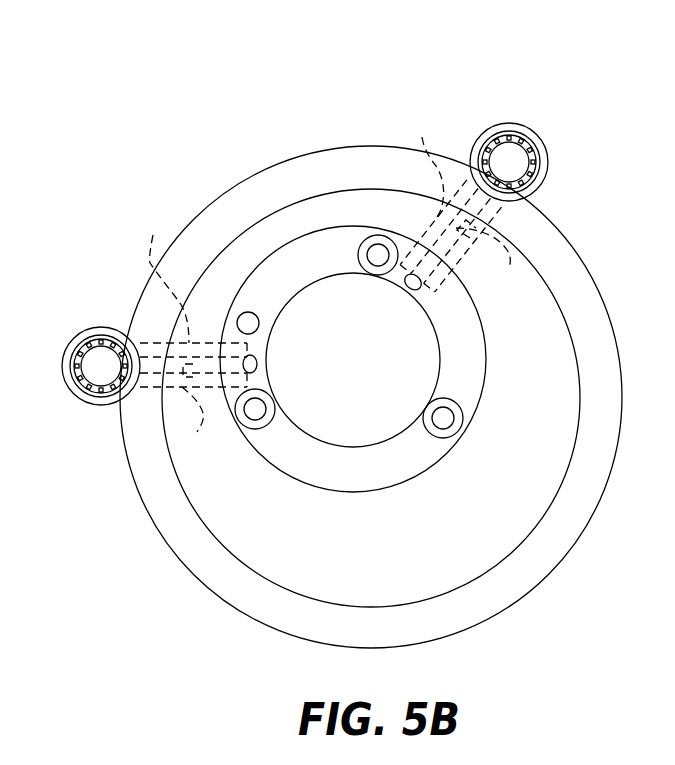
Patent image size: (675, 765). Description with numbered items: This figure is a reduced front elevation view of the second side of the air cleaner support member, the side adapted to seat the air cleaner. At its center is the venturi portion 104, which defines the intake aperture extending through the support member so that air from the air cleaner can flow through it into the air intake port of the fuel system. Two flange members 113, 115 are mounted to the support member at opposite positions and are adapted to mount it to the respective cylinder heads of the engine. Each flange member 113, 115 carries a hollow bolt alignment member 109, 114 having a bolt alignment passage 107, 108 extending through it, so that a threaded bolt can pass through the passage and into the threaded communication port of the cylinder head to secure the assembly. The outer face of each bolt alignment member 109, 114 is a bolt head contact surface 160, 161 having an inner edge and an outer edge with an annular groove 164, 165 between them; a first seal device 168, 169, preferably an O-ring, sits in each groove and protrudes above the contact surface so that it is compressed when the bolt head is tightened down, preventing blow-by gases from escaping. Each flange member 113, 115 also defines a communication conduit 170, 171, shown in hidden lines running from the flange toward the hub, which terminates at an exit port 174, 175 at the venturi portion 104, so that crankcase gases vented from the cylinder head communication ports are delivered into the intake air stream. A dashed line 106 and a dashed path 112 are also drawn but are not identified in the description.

The venturi portion 104 is at (288, 258).
The cable 106 is at (422, 165).
The bolt alignment passage 107 is at (483, 128).
The bolt alignment passage 108 is at (100, 370).
The bolt alignment member 109 is at (548, 175).
The cable path 112 is at (162, 276).
The flange member 113 is at (538, 128).
The bolt alignment member 114 is at (102, 327).
The flange member 115 is at (72, 376).
The bolt head contact surface 160 is at (508, 127).
The bolt head contact surface 161 is at (78, 387).
The annular groove 164 is at (536, 146).
The annular groove 165 is at (108, 395).
The first seal device 168 is at (537, 160).
The first seal device 169 is at (81, 343).
The communication conduit 170 is at (198, 422).
The communication conduit 171 is at (491, 261).
The exit port 174 is at (257, 362).
The exit port 175 is at (407, 283).